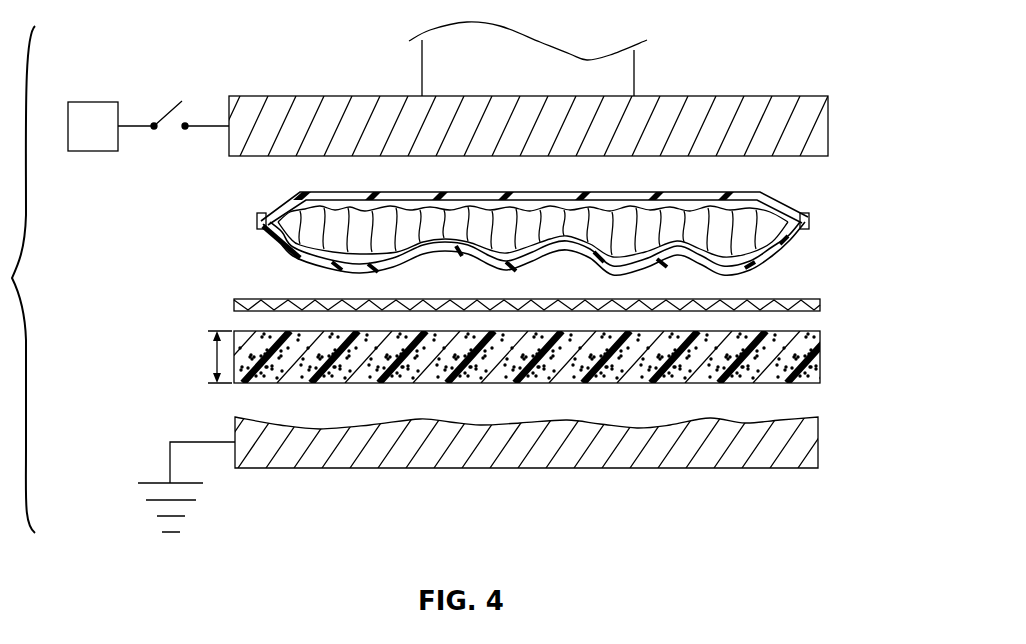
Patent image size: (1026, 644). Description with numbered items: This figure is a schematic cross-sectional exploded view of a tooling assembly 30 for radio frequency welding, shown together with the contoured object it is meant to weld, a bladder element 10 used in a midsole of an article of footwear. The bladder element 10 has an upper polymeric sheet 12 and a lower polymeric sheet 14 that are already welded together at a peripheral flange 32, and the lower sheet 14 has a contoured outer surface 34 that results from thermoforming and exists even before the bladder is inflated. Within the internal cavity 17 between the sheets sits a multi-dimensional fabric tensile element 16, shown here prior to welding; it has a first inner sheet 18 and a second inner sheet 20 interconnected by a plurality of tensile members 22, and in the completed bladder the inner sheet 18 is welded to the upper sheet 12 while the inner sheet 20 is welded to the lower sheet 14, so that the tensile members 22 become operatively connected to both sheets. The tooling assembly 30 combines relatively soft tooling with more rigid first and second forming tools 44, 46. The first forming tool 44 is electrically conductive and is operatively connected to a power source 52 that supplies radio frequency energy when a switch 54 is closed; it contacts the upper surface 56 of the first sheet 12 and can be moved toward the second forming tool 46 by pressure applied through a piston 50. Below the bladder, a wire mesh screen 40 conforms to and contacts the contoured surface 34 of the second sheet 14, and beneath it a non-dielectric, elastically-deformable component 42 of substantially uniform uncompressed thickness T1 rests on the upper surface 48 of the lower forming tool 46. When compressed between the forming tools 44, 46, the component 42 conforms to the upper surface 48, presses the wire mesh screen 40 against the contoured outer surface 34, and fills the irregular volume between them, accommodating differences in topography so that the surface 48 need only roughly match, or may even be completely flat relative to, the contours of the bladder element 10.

The bladder element 10 is at (232, 216).
The upper polymeric sheet 12 is at (287, 203).
The lower polymeric sheet 14 is at (278, 247).
The multi-dimensional fabric tensile element 16 is at (375, 210).
The internal cavity 17 is at (724, 207).
The first inner sheet 18 is at (742, 222).
The second inner sheet 20 is at (770, 254).
The tensile members 22 is at (748, 225).
The tooling assembly 30 is at (852, 151).
The peripheral flange 32 is at (258, 221).
The contoured outer surface 34 is at (420, 268).
The wire mesh screen 40 is at (234, 304).
The non-dielectric, elastically-deformable component 42 is at (820, 356).
The first forming tool 44 is at (829, 128).
The second forming tool 46 is at (820, 440).
The upper surface 48 is at (330, 424).
The piston 50 is at (636, 70).
The power source 52 is at (93, 110).
The switch 54 is at (194, 98).
The upper surface 56 is at (668, 188).
The thickness T1 is at (212, 357).